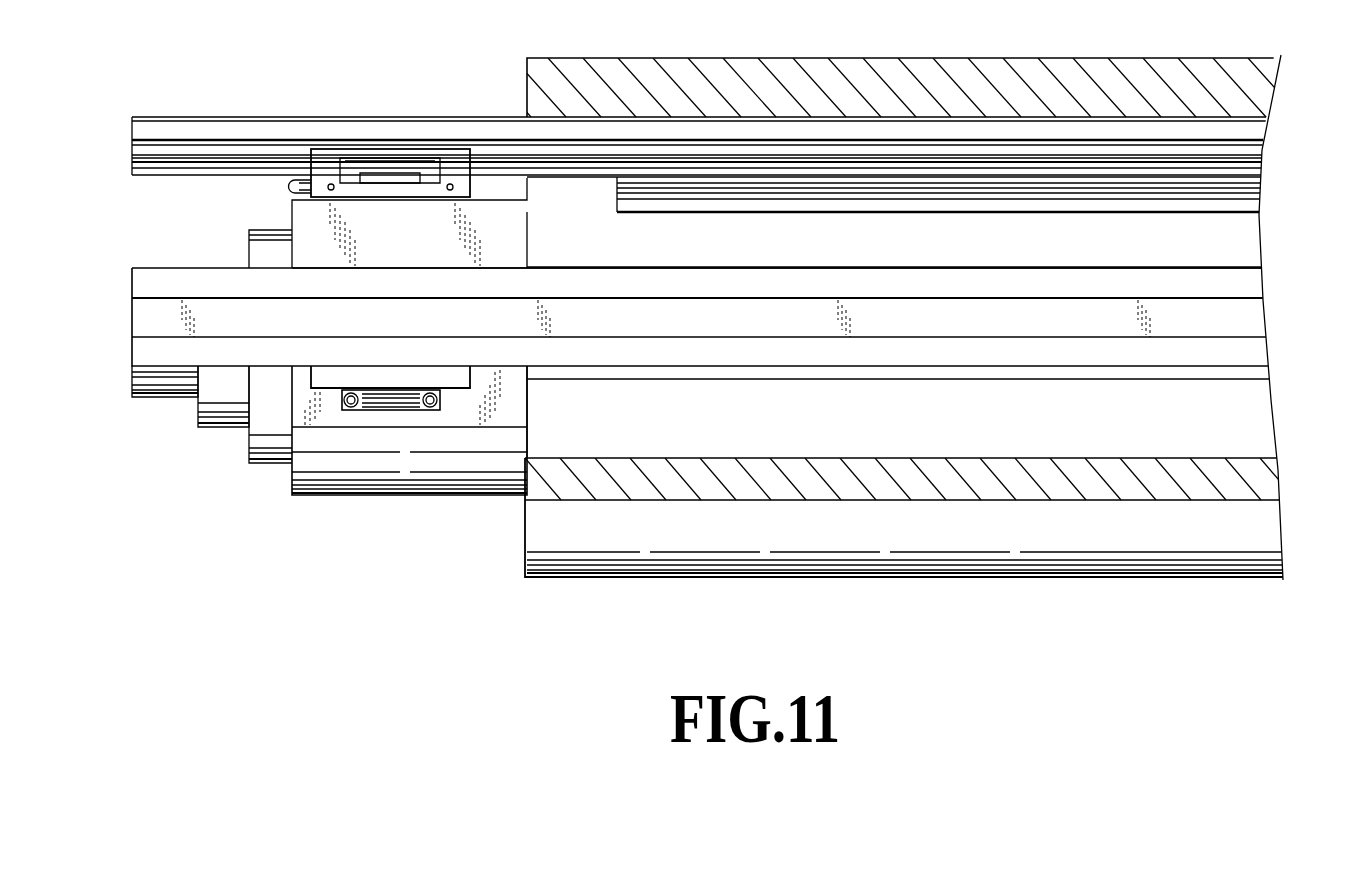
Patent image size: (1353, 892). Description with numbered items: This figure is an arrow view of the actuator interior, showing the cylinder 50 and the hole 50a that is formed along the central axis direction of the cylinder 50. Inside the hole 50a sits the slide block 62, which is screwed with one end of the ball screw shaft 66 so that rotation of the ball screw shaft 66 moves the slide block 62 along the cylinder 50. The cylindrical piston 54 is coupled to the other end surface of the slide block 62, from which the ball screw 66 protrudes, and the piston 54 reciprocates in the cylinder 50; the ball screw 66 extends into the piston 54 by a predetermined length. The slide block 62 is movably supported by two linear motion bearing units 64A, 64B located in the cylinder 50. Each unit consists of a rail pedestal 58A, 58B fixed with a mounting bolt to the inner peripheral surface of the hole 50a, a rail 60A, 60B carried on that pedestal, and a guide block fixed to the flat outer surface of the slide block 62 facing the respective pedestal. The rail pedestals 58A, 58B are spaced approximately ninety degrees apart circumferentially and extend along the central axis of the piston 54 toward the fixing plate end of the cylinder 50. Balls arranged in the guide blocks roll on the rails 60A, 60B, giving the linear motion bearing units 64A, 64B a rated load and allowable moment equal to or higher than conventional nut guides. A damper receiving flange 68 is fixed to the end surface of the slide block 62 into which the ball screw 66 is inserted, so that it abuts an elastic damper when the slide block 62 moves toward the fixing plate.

The cylinder 50 is at (864, 78).
The hole 50a is at (1238, 427).
The piston 54 is at (1238, 243).
The rail pedestal 58A is at (676, 119).
The rail 60A is at (140, 152).
The rail pedestal 58B is at (165, 429).
The rail 60B is at (170, 355).
The slide block 62 is at (356, 473).
The linear motion bearing unit 64A is at (455, 163).
The linear motion bearing unit 64B is at (467, 380).
The ball screw shaft 66 is at (130, 429).
The damper receiving flange 68 is at (227, 415).